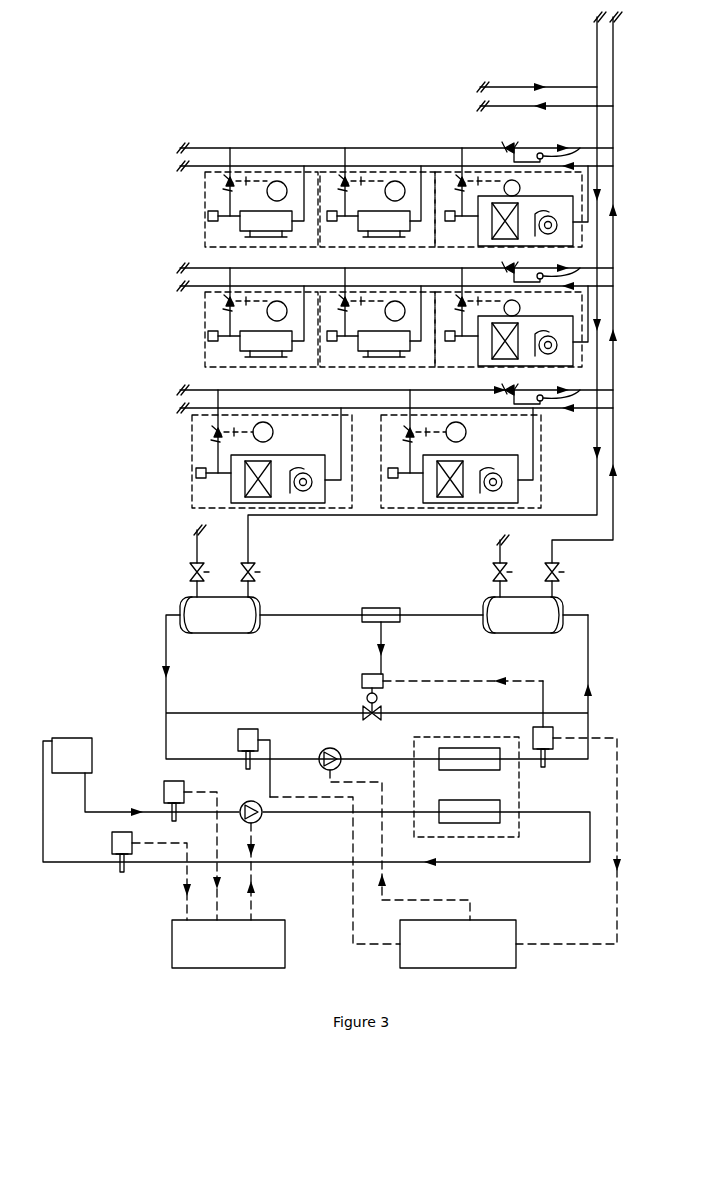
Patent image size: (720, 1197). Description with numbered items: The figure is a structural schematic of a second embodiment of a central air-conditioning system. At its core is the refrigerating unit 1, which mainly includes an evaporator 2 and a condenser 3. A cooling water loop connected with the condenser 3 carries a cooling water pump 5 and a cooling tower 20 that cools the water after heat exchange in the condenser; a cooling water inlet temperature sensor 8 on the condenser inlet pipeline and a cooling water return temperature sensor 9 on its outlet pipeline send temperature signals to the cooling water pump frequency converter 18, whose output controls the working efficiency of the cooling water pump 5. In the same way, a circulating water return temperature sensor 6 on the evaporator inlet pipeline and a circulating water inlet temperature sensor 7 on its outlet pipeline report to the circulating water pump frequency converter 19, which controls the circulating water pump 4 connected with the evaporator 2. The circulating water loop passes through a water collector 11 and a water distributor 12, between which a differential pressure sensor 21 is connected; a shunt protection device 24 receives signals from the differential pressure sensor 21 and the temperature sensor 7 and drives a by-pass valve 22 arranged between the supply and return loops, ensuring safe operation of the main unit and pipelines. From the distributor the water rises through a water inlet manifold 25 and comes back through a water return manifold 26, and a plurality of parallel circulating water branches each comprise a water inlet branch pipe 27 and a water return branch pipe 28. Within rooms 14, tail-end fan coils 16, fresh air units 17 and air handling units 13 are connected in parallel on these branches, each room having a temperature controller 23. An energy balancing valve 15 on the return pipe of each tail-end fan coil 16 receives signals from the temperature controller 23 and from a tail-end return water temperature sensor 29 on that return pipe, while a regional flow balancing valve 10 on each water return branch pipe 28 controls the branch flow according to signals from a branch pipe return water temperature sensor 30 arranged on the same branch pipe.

The refrigerating unit 1 is at (520, 810).
The evaporator 2 is at (469, 759).
The condenser 3 is at (469, 811).
The circulating water pump 4 is at (320, 757).
The cooling water pump 5 is at (262, 820).
The circulating water return temperature sensor 6 is at (238, 742).
The circulating water inlet temperature sensor 7 is at (553, 740).
The cooling water inlet temperature sensor 8 is at (164, 790).
The cooling water return temperature sensor 9 is at (112, 843).
The regional flow balancing valve 10 is at (520, 146).
The water collector 11 is at (220, 579).
The water distributor 12 is at (523, 584).
The air handling unit 13 is at (280, 455).
The room 14 is at (230, 148).
The energy balancing valve 15 is at (510, 87).
The tail-end fan coil 16 is at (325, 284).
The fresh air unit 17 is at (520, 205).
The cooling water pump frequency converter 18 is at (228, 944).
The circulating water pump frequency converter 19 is at (458, 944).
The cooling tower 20 is at (75, 738).
The differential pressure sensor 21 is at (385, 608).
The by-pass valve 22 is at (362, 712).
The temperature controller 23 is at (278, 181).
The shunt protection device 24 is at (385, 678).
The water inlet manifold 25 is at (614, 63).
The water return manifold 26 is at (597, 48).
The water inlet branch pipe 27 is at (180, 166).
The water return branch pipe 28 is at (195, 148).
The tail-end return water temperature sensor 29 is at (212, 222).
The branch pipe return water temperature sensor 30 is at (580, 156).